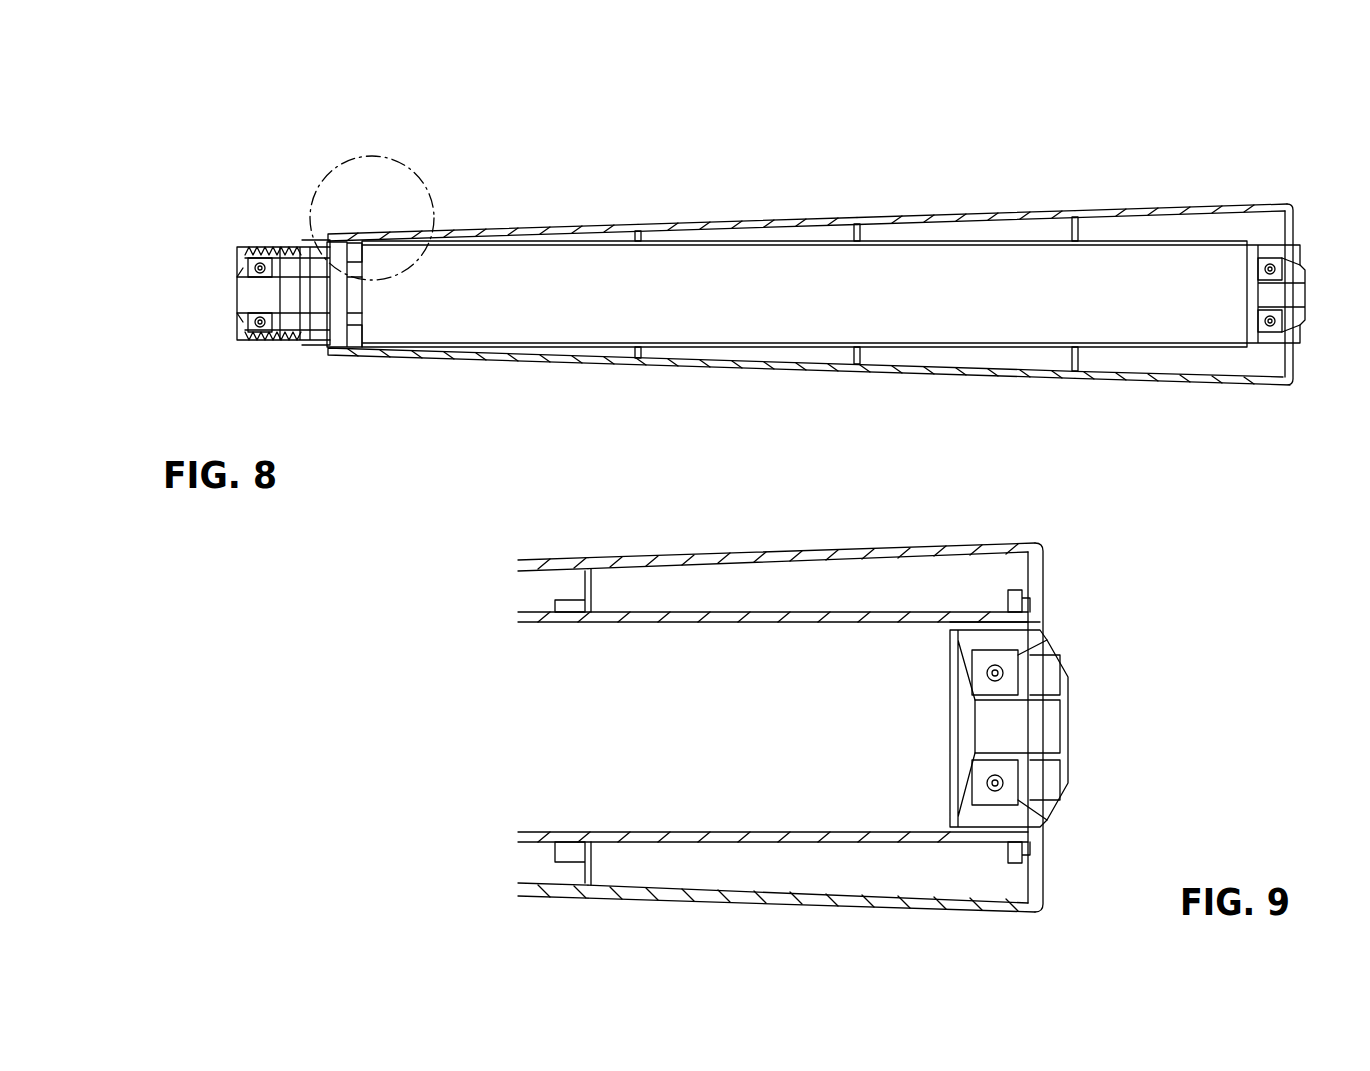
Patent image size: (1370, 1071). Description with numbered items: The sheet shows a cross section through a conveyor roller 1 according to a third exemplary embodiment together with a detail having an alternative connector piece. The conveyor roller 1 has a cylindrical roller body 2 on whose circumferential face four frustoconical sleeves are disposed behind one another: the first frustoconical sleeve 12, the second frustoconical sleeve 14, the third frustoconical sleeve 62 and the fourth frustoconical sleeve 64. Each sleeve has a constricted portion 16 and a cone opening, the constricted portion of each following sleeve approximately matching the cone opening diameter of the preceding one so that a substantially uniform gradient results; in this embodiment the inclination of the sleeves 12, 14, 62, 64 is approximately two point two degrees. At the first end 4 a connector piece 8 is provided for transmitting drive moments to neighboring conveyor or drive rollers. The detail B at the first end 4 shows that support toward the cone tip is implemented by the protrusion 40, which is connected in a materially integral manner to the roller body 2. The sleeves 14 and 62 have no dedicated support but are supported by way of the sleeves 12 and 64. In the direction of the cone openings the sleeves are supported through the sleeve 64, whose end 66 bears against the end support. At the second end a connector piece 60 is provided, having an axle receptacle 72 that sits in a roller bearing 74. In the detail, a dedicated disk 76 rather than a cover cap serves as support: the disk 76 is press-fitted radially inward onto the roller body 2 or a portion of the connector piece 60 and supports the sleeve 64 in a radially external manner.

In FIG. 8, the conveyor roller 1 is at (612, 142).
In FIG. 8, the roller body 2 is at (960, 247).
In FIG. 9, the roller body 2 is at (750, 623).
In FIG. 8, the first end 4 is at (408, 124).
In FIG. 8, the connector piece 8 is at (278, 240).
In FIG. 8, the first frustoconical sleeve 12 is at (553, 226).
In FIG. 8, the second frustoconical sleeve 14 is at (768, 218).
In FIG. 8, the constricted portion 16 is at (428, 378).
In FIG. 8, the protrusion 40 is at (372, 240).
In FIG. 8, the detail B is at (338, 168).
In FIG. 9, the connector piece 60 is at (1097, 732).
In FIG. 8, the third frustoconical sleeve 62 is at (970, 212).
In FIG. 9, the third frustoconical sleeve 62 is at (545, 562).
In FIG. 8, the fourth frustoconical sleeve 64 is at (1190, 207).
In FIG. 9, the fourth frustoconical sleeve 64 is at (850, 545).
In FIG. 8, the end 66 is at (1296, 165).
In FIG. 9, the end 66 is at (1022, 500).
In FIG. 9, the axle receptacle 72 is at (1045, 740).
In FIG. 9, the roller bearing 74 is at (1020, 815).
In FIG. 9, the disk 76 is at (1038, 587).